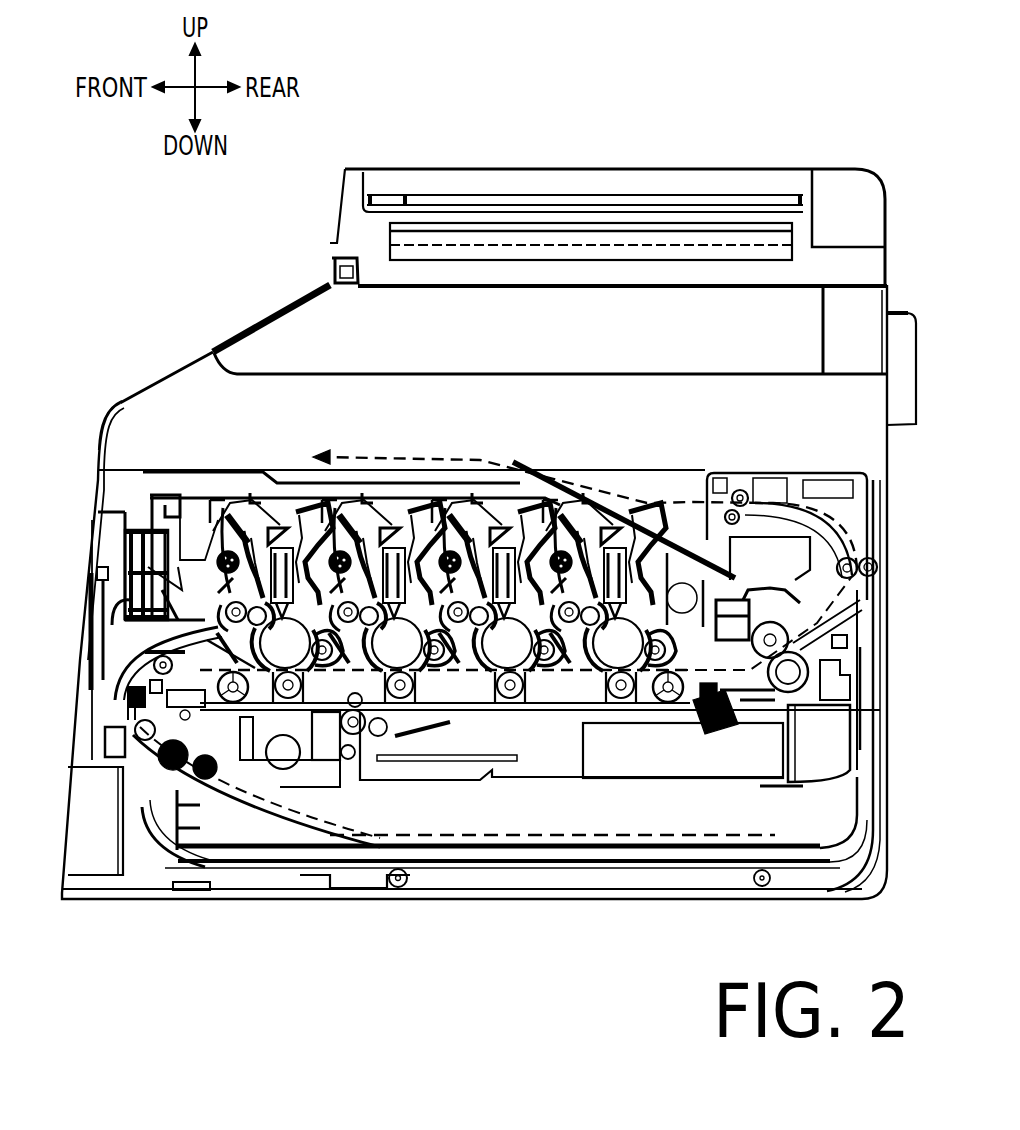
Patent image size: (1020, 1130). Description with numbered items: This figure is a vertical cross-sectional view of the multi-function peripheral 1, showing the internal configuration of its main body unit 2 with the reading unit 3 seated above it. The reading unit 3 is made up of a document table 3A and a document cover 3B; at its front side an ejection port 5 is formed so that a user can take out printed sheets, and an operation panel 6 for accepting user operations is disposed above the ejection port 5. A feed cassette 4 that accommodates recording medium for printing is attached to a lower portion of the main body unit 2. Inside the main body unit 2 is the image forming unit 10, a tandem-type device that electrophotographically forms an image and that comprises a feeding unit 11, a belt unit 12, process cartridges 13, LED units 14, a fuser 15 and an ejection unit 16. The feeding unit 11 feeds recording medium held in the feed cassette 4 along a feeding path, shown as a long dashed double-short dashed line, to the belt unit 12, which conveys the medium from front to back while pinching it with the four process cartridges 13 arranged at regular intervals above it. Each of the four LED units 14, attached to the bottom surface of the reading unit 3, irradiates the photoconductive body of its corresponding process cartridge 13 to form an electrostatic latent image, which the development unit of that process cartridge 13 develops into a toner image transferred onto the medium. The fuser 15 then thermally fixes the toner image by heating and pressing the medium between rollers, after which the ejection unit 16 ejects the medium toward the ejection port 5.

The multi-function peripheral 1 is at (147, 222).
The main body unit 2 is at (887, 612).
The reading unit 3 is at (188, 366).
The document table 3A is at (120, 411).
The document cover 3B is at (335, 254).
The feed cassette 4 is at (285, 870).
The ejection port 5 is at (218, 470).
The operation panel 6 is at (292, 303).
The image forming unit 10 is at (678, 466).
The feeding unit 11 is at (175, 790).
The belt unit 12 is at (465, 712).
The process cartridge 13 is at (258, 535).
The LED unit 14 is at (293, 523).
The fuser 15 is at (743, 660).
The ejection unit 16 is at (718, 508).